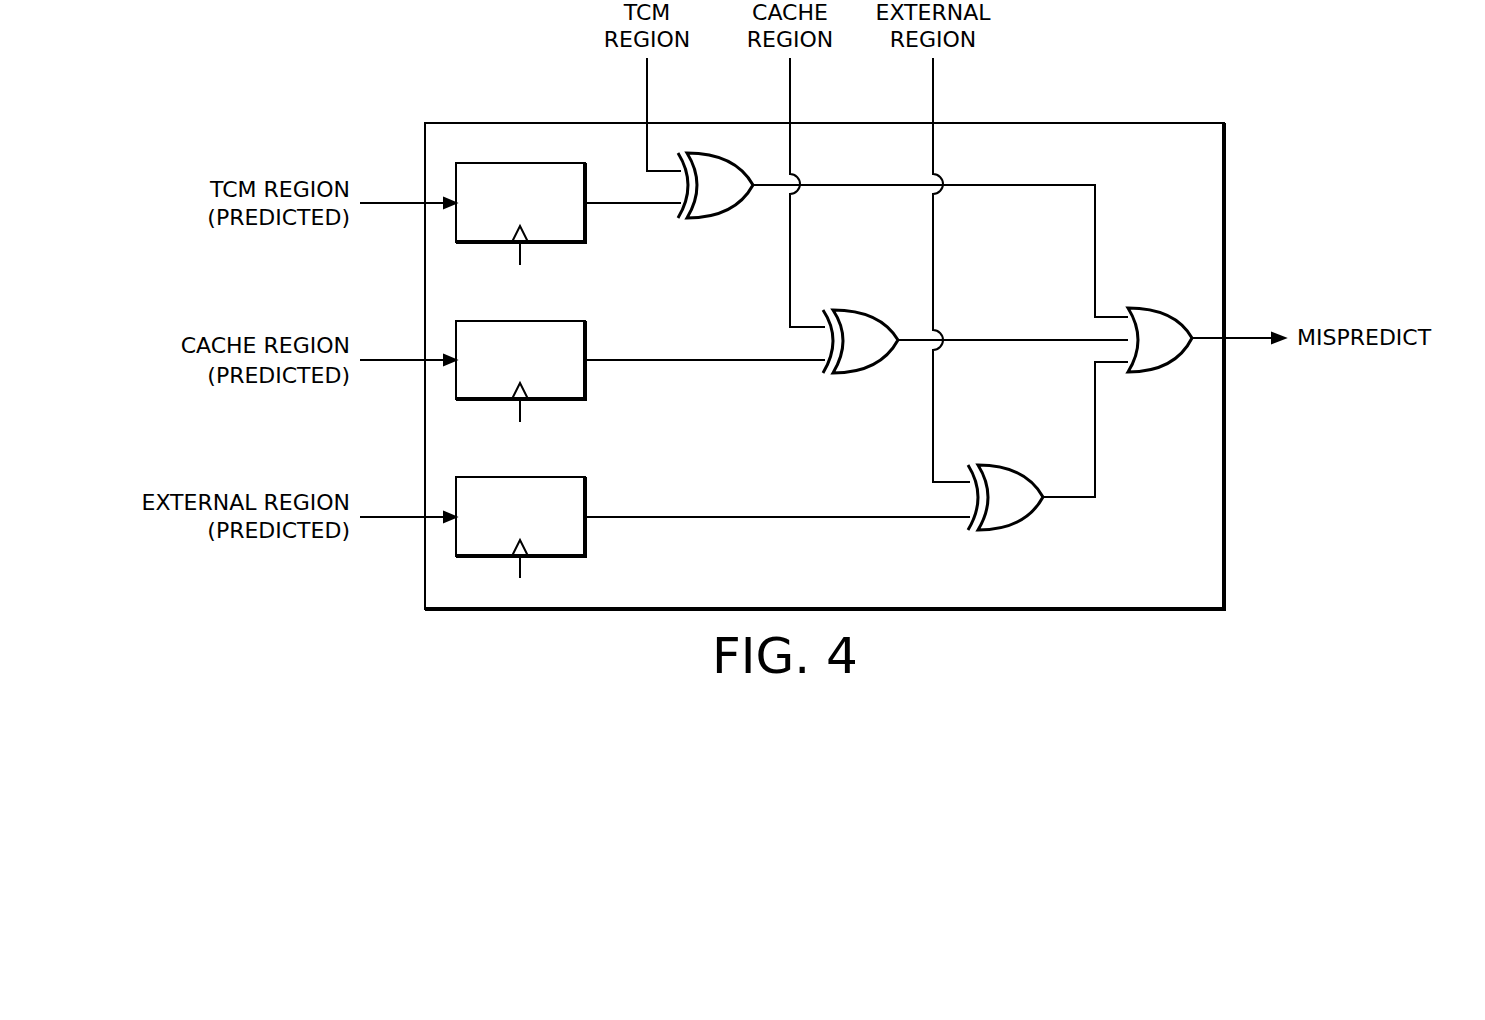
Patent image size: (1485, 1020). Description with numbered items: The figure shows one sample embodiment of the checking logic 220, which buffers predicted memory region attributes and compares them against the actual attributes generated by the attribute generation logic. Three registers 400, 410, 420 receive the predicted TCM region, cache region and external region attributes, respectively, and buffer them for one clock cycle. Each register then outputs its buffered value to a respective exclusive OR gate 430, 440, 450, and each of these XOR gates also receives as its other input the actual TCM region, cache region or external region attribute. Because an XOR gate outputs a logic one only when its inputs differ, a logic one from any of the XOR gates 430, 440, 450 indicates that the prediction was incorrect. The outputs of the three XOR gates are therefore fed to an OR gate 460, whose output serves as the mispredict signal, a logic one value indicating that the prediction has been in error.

The checking logic 220 is at (1191, 122).
The register 400 is at (586, 243).
The register 410 is at (586, 400).
The register 420 is at (586, 557).
The exclusive OR (XOR) gate 430 is at (704, 221).
The exclusive OR (XOR) gate 440 is at (849, 309).
The exclusive OR (XOR) gate 450 is at (990, 464).
The OR gate 460 is at (1142, 308).